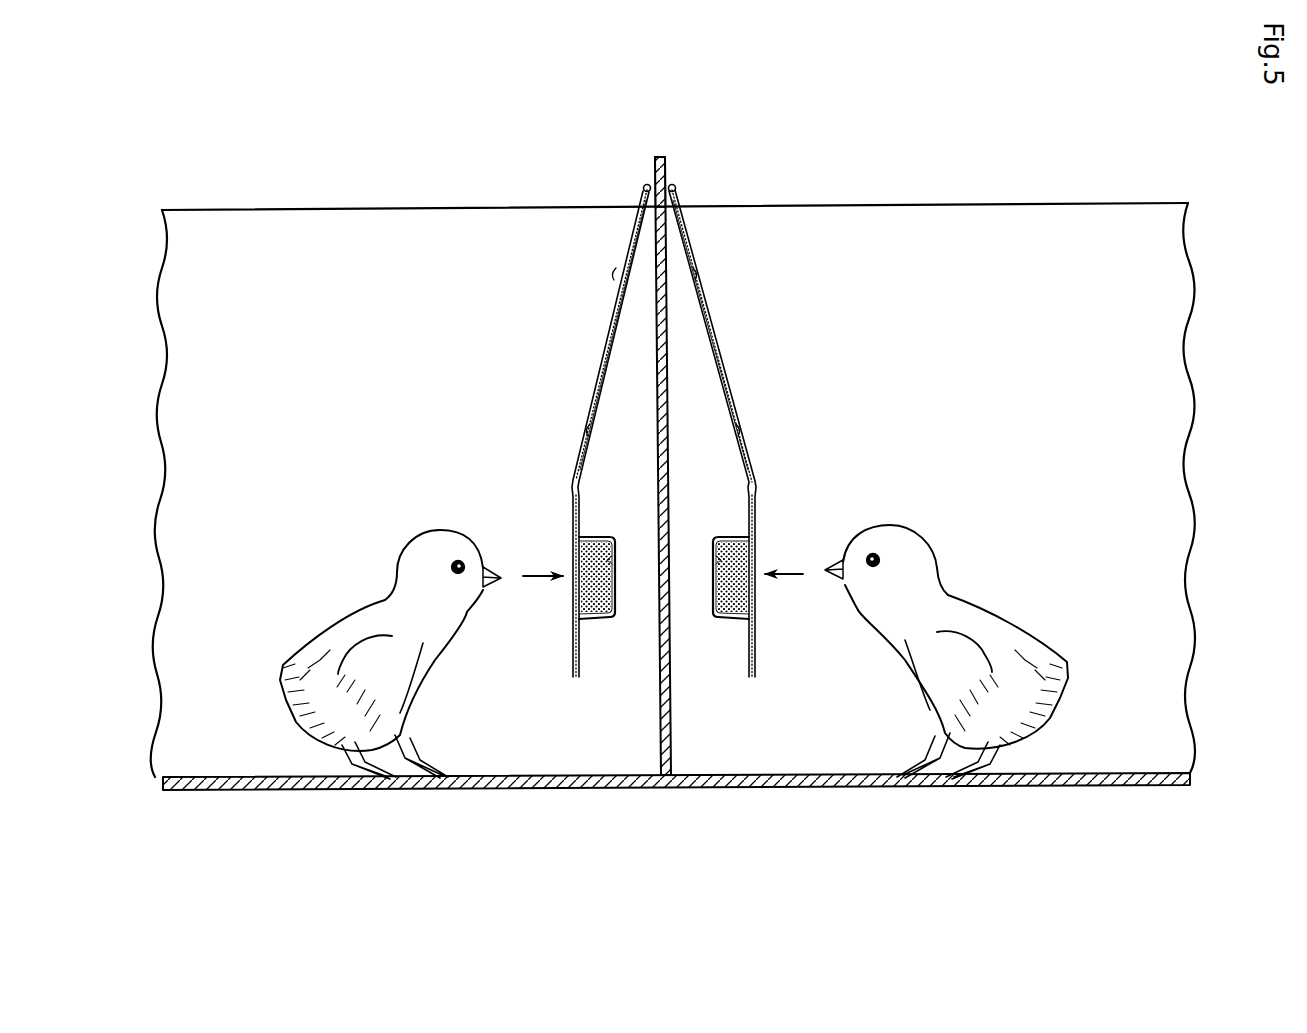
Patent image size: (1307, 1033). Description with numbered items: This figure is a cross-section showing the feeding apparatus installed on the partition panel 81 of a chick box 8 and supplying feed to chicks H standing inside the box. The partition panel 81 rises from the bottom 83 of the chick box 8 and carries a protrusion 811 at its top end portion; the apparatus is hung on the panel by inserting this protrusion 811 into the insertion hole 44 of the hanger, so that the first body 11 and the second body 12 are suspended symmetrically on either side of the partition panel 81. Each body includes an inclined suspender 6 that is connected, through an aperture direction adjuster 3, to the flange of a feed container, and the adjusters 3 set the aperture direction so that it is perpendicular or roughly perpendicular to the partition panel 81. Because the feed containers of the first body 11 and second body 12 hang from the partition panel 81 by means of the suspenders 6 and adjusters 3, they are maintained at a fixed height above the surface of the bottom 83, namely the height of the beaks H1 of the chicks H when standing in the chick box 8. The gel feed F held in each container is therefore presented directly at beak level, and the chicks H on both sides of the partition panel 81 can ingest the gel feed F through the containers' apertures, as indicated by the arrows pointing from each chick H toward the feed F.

The chick box 8 is at (978, 187).
The partition panel 81 is at (660, 733).
The protrusion 811 is at (655, 170).
The bottom 83 is at (1068, 774).
The insertion hole 44 is at (674, 187).
The first body 11 is at (593, 292).
The second body 12 is at (730, 288).
The suspender 6 is at (595, 383).
The aperture direction adjuster 3 is at (575, 487).
The gel feed F is at (573, 600).
The chick H is at (302, 594).
The beak H1 is at (492, 571).